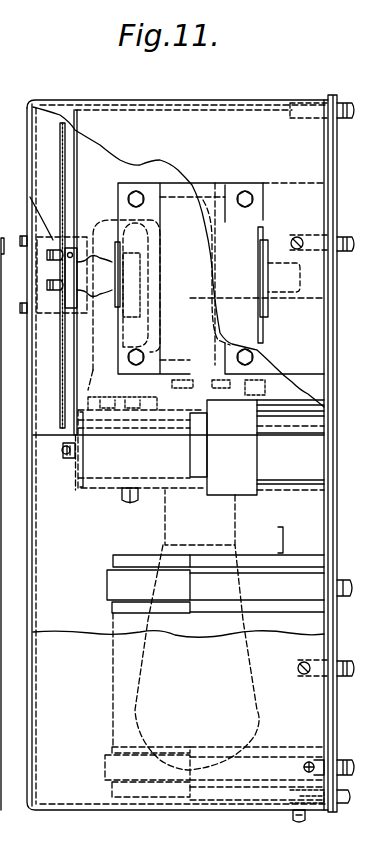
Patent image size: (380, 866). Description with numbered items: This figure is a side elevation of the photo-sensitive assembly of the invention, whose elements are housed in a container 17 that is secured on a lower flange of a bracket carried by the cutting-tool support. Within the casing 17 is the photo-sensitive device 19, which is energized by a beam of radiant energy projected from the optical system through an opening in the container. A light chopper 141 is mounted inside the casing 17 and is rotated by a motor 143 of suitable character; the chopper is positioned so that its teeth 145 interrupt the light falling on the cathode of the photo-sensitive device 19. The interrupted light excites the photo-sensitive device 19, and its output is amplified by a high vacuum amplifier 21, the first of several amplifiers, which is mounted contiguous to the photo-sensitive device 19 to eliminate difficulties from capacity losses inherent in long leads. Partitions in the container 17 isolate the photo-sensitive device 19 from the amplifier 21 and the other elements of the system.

The container 17 is at (79, 811).
The photo-sensitive device 19 is at (110, 218).
The high vacuum amplifier 21 is at (135, 709).
The light chopper 141 is at (61, 165).
The motor 143 is at (257, 218).
The teeth 145 is at (61, 186).